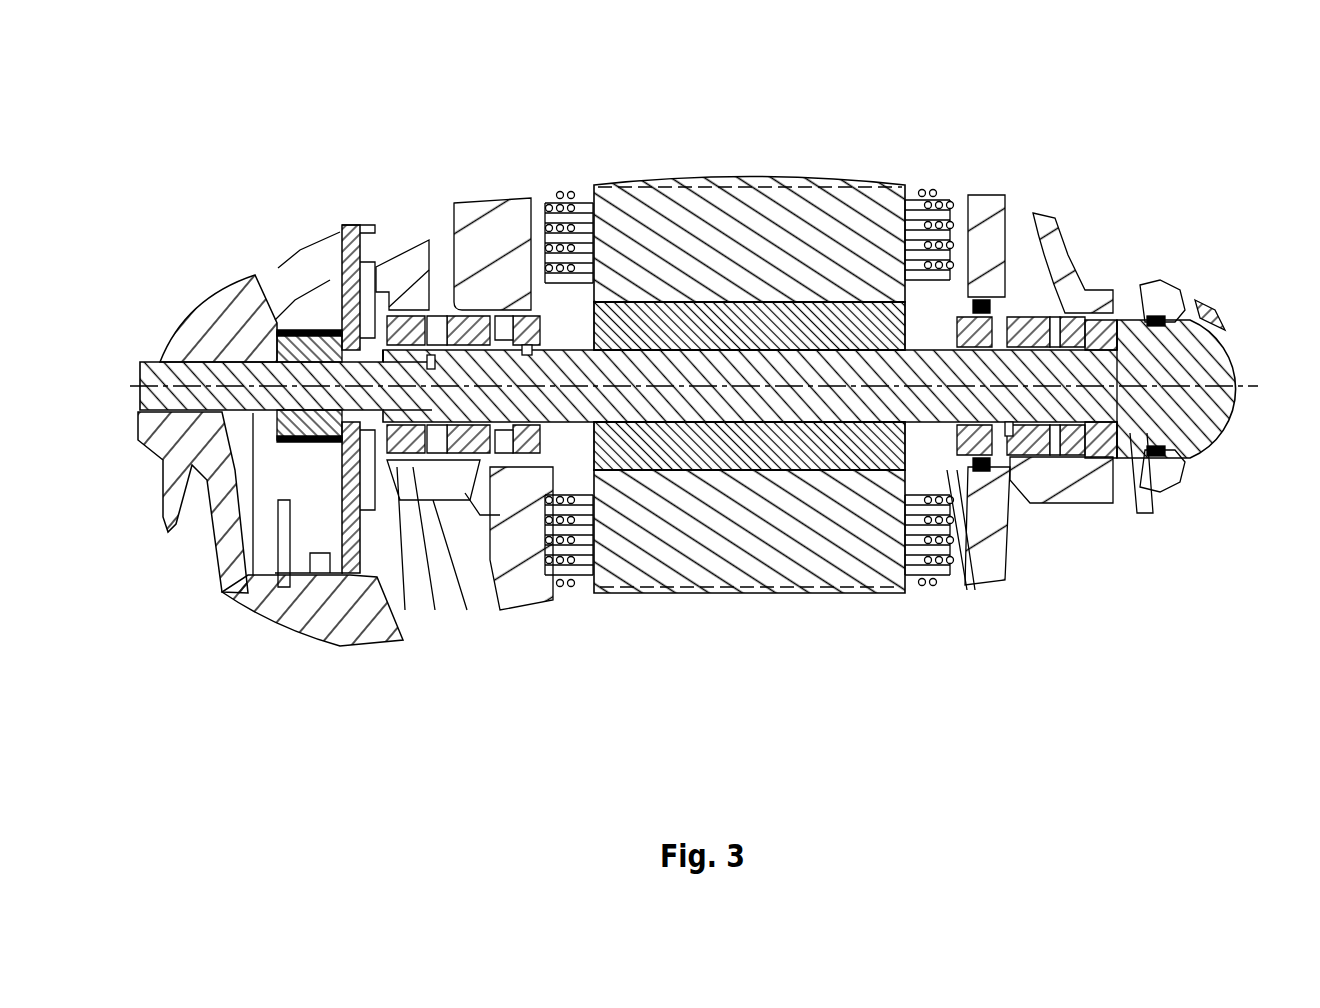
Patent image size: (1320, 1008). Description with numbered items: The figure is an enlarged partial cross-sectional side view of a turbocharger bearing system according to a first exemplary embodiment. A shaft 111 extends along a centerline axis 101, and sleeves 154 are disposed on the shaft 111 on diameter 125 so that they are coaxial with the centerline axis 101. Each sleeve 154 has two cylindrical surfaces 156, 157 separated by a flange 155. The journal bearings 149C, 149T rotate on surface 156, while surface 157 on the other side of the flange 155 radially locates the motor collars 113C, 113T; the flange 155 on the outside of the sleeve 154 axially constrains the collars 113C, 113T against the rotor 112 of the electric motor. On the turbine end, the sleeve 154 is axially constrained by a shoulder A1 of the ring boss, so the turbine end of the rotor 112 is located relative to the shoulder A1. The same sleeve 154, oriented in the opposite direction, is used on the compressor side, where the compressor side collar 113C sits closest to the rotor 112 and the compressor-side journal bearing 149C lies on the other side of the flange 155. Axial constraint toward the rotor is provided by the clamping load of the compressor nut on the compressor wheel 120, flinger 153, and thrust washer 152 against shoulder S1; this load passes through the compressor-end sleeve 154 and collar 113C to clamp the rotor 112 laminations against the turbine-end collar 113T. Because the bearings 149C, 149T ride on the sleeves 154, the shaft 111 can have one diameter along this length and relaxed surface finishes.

The centerline axis 101 is at (1250, 385).
The shaft 111 is at (1200, 318).
The rotor 112 is at (773, 317).
The compressor side collar 113C is at (568, 303).
The turbine-end collar 113T is at (970, 310).
The compressor wheel 120 is at (222, 333).
The diameter 125 is at (705, 356).
The compressor-side journal bearing 149C is at (420, 318).
The turbine-side journal bearing 149T is at (1082, 313).
The thrust washer 152 is at (348, 305).
The flinger 153 is at (280, 330).
The sleeve 154 is at (583, 340).
The flange 155 is at (1000, 440).
The sleeve surface 156 is at (428, 360).
The sleeve surface 157 is at (527, 352).
The shoulder S1 is at (385, 372).
The shoulder A1 is at (1133, 437).